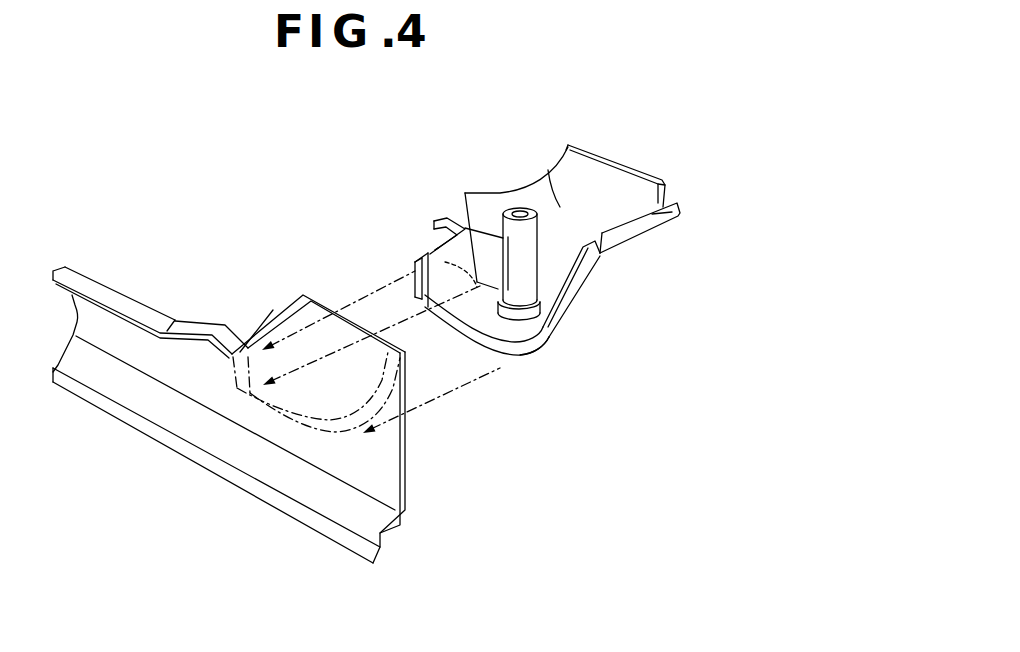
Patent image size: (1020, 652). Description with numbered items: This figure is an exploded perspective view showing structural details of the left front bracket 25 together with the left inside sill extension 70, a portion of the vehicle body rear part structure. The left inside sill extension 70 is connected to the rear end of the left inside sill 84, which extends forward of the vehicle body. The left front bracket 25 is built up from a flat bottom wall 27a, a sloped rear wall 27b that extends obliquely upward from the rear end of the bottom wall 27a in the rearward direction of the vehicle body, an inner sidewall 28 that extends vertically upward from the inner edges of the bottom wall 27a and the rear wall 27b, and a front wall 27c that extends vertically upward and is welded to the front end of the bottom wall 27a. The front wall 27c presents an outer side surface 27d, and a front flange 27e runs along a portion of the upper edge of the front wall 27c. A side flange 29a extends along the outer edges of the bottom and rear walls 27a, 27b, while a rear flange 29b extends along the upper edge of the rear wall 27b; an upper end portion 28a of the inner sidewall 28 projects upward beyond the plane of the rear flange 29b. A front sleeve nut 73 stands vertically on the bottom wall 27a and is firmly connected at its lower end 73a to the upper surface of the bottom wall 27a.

The left front bracket 25 is at (497, 190).
The flat bottom wall 27a is at (478, 313).
The sloped rear wall 27b is at (611, 271).
The front wall 27c is at (436, 232).
The outer side surface 27d is at (417, 310).
The front flange 27e is at (440, 219).
The inner sidewall 28 is at (546, 172).
The upper end portion 28a is at (620, 183).
The side flange 29a is at (547, 342).
The rear flange 29b is at (682, 215).
The left inside sill extension 70 is at (380, 472).
The front sleeve nut 73 is at (465, 230).
The lower end 73a is at (413, 270).
The left inside sill 84 is at (138, 348).